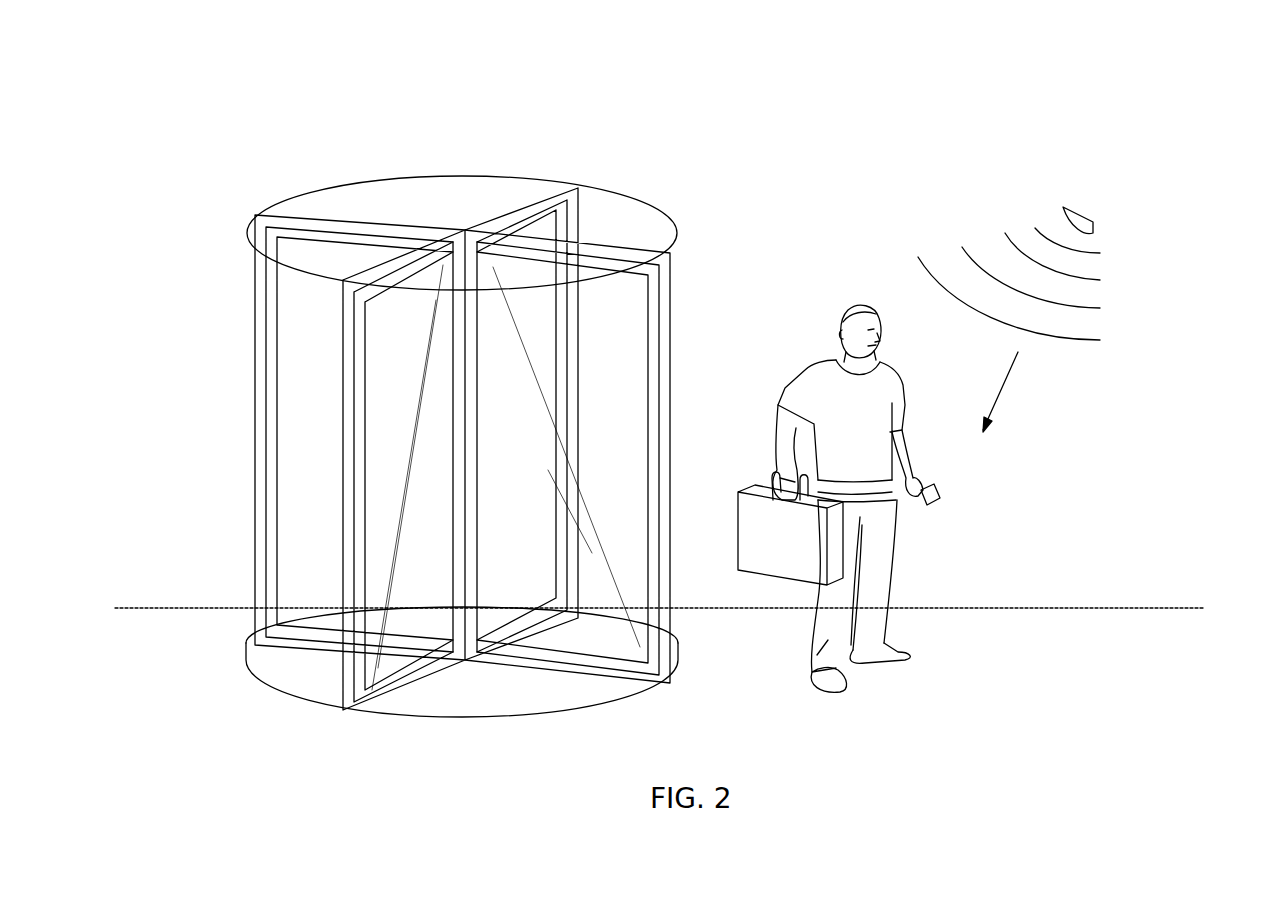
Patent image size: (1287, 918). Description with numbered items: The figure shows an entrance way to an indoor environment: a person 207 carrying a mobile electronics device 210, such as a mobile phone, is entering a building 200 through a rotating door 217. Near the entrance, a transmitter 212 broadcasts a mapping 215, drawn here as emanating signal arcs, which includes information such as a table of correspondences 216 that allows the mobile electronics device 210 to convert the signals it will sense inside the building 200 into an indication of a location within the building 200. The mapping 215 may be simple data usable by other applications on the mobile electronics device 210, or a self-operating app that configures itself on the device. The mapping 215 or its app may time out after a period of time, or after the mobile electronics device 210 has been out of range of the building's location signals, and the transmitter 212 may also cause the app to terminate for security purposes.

The building 200 is at (238, 104).
The rotating door 217 is at (673, 220).
The person 207 is at (793, 383).
The mobile electronics device 210 is at (937, 505).
The transmitter 212 is at (1083, 216).
The mapping 215 is at (1158, 391).
The table of correspondences 216 is at (1080, 404).